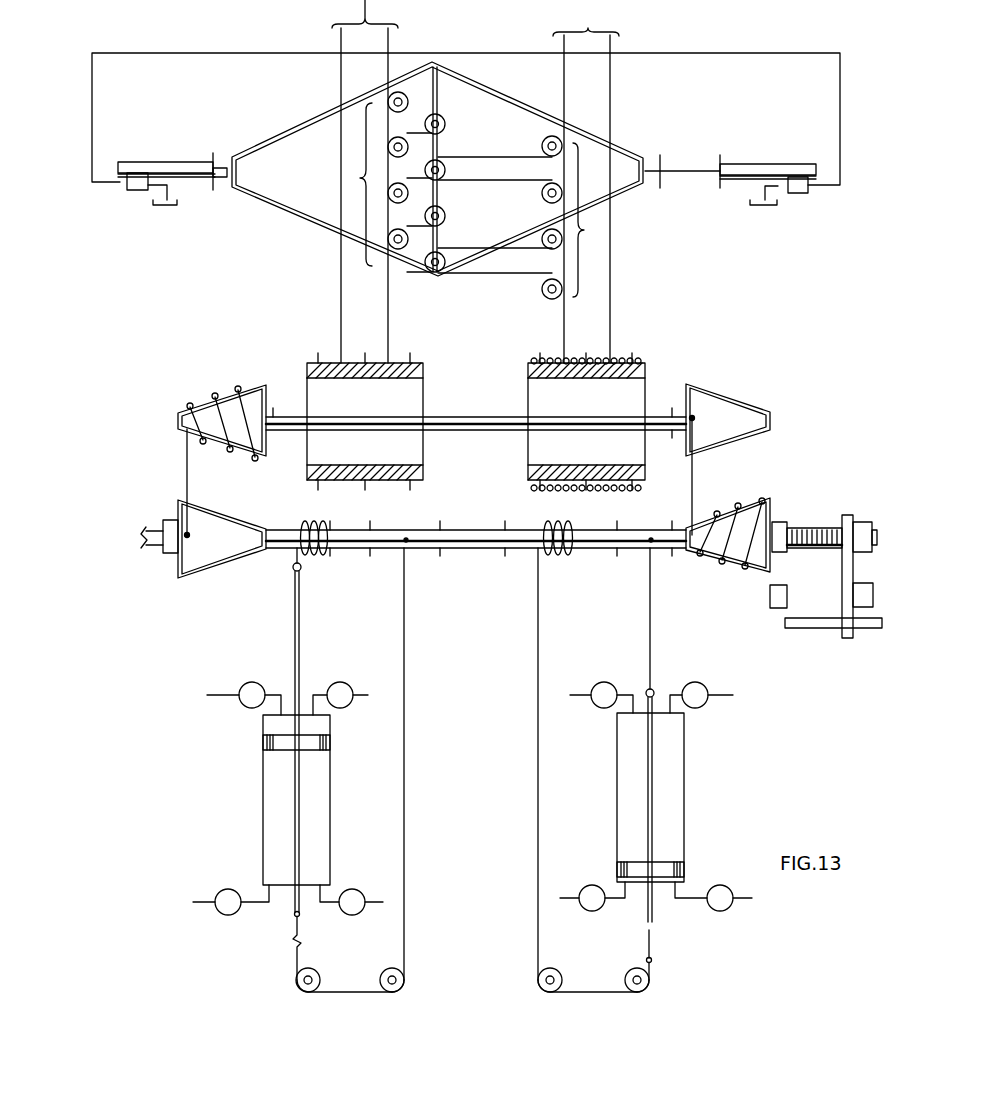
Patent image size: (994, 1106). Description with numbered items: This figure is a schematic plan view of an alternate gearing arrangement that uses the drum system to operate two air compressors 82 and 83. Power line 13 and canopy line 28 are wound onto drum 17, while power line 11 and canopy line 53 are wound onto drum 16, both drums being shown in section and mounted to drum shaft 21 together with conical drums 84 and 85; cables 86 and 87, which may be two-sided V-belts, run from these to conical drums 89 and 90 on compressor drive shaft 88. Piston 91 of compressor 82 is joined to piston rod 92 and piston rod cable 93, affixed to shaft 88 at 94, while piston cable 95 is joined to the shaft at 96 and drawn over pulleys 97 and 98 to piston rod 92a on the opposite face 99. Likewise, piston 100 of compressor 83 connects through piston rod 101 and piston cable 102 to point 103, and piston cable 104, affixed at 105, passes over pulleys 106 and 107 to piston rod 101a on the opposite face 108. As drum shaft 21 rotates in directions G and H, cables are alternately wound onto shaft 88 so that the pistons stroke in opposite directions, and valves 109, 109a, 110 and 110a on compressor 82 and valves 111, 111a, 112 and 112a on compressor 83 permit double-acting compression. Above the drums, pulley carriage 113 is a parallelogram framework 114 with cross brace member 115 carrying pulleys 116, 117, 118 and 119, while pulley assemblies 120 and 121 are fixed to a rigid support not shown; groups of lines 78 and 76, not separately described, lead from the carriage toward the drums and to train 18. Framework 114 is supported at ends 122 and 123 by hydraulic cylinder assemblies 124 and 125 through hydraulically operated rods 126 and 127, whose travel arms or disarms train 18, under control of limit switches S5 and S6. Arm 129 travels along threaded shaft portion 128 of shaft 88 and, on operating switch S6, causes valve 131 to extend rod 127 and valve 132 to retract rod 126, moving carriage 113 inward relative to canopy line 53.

The power line 11 is at (563, 325).
The power line 13 is at (388, 307).
The drum 16 is at (615, 365).
The drum 17 is at (408, 360).
The train 18 is at (588, 28).
The drum shaft 21 is at (462, 414).
The canopy line 28 is at (340, 322).
The canopy line 53 is at (610, 303).
The yarn strands 76 is at (578, 183).
The yarn strands 78 is at (424, 181).
The air compressor 82 is at (263, 804).
The air compressor 83 is at (684, 803).
The conical drum 84 is at (250, 453).
The conical drum 85 is at (742, 404).
The cable 86 is at (186, 478).
The cable 87 is at (693, 478).
The compressor drive shaft 88 is at (490, 554).
The conical drum 89 is at (212, 566).
The conical drum 90 is at (732, 567).
The piston 91 is at (332, 745).
The piston rod 92 is at (300, 645).
The piston rod 92a is at (300, 849).
The piston rod cable 93 is at (323, 546).
The attachment point 94 is at (325, 531).
The piston cable 95 is at (408, 696).
The attachment point 96 is at (410, 536).
The pulley 97 is at (405, 969).
The pulley 98 is at (316, 970).
The opposite face 99 is at (318, 751).
The piston 100 is at (662, 873).
The piston rod 101 is at (653, 762).
The piston rod 101a is at (645, 909).
The piston cable 102 is at (651, 615).
The attachment point 103 is at (651, 536).
The piston cable 104 is at (540, 649).
The attachment point 105 is at (575, 535).
The pulley 106 is at (537, 982).
The pulley 107 is at (628, 970).
The opposite face 108 is at (662, 885).
The valve 109 is at (252, 709).
The valve 109a is at (342, 683).
The valve 110 is at (225, 890).
The valve 110a is at (365, 893).
The valve 111 is at (600, 708).
The valve 111a is at (706, 692).
The valve 112 is at (590, 885).
The valve 112a is at (725, 905).
The pulley carriage 113 is at (318, 104).
The parallelogram framework 114 is at (492, 87).
The cross brace member 115 is at (440, 90).
The pulley 116 is at (447, 124).
The pulley 117 is at (447, 170).
The pulley 118 is at (446, 220).
The pulley 119 is at (445, 275).
The pulley assembly 120 is at (356, 178).
The pulley assembly 121 is at (598, 231).
The end of framework 122 is at (224, 183).
The end of framework 123 is at (650, 180).
The hydraulic cylinder assembly 124 is at (158, 162).
The hydraulic cylinder assembly 125 is at (762, 160).
The hydraulically operated rod 126 is at (224, 157).
The hydraulically operated rod 127 is at (700, 168).
The threaded shaft portion 128 is at (840, 513).
The arm 129 is at (850, 567).
The valve 131 is at (800, 193).
The valve 132 is at (138, 195).
The direction of rotation G is at (272, 432).
The direction of rotation H is at (650, 433).
The limit switch S5 is at (772, 618).
The limit switch S6 is at (868, 597).